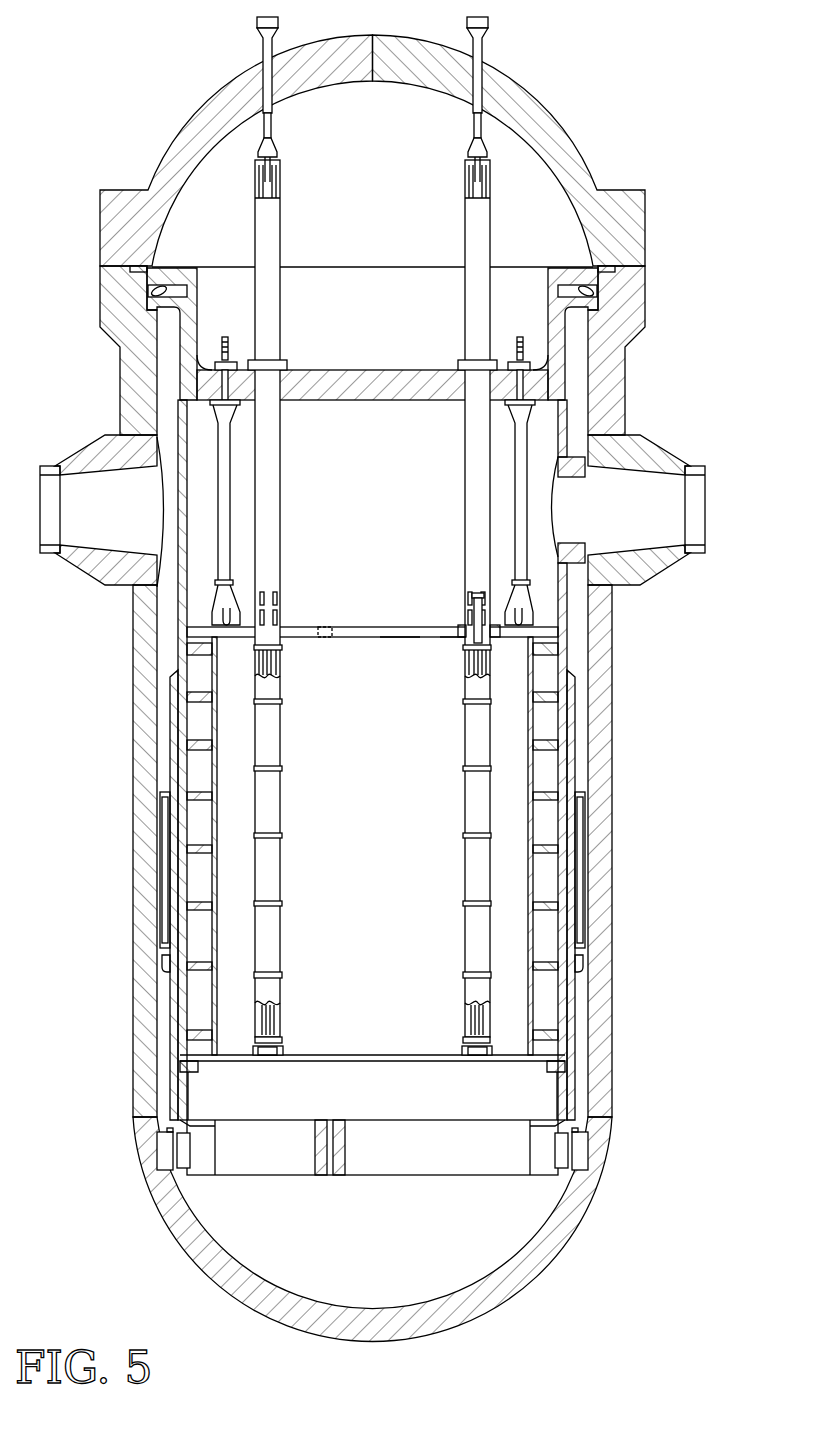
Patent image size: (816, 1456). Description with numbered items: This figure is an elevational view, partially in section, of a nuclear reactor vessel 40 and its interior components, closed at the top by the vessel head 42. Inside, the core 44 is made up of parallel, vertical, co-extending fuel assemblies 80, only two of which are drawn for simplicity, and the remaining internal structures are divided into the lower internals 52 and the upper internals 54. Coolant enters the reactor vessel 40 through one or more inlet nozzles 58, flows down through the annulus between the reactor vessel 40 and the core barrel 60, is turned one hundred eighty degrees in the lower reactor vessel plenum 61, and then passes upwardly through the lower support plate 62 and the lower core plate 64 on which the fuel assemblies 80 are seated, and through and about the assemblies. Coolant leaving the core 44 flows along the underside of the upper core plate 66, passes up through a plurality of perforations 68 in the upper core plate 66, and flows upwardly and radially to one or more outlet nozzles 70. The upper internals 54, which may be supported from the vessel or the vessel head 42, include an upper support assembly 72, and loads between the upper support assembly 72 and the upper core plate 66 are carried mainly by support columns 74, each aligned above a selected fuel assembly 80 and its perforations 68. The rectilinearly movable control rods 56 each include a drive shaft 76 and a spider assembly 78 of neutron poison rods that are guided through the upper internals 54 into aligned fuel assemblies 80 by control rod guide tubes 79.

The reactor vessel 40 is at (608, 712).
The vessel head 42 is at (645, 232).
The core 44 is at (385, 828).
The lower internals 52 is at (385, 1093).
The upper internals 54 is at (385, 468).
The control rods 56 is at (463, 637).
The inlet nozzles 58 is at (80, 448).
The core barrel 60 is at (160, 622).
The lower reactor vessel plenum 61 is at (552, 1232).
The lower support plate 62 is at (417, 1162).
The lower core plate 64 is at (442, 1055).
The upper core plate 66 is at (403, 637).
The perforations 68 is at (325, 626).
The outlet nozzles 70 is at (657, 450).
The upper support assembly 72 is at (550, 268).
The support columns 74 is at (232, 506).
The drive shaft 76 is at (473, 600).
The spider assembly 78 is at (470, 625).
The control rod guide tubes 79 is at (468, 538).
The fuel assemblies 80 is at (280, 742).